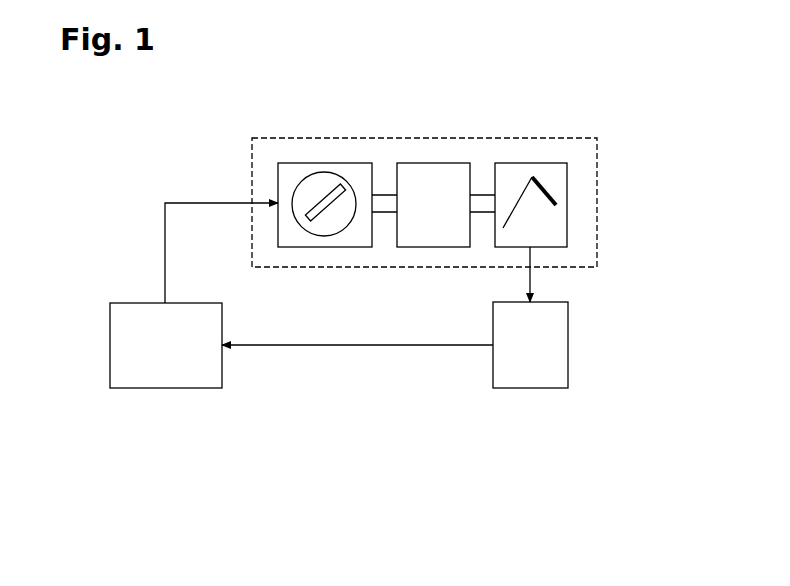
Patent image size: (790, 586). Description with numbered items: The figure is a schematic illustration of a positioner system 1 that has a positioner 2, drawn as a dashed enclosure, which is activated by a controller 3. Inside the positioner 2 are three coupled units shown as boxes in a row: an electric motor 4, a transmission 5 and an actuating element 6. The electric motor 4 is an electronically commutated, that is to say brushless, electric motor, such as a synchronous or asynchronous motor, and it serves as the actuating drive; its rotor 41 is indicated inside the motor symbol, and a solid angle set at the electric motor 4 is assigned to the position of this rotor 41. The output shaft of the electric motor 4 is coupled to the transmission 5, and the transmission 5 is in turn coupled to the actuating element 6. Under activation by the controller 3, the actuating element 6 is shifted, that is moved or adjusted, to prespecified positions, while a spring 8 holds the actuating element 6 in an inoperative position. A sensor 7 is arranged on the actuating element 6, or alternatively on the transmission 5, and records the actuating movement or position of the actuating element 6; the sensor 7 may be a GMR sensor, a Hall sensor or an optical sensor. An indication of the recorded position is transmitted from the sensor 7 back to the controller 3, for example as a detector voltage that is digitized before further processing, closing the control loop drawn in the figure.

The positioner system 1 is at (215, 133).
The positioner 2 is at (597, 138).
The controller 3 is at (165, 388).
The electric motor 4 is at (296, 163).
The rotor 41 is at (326, 178).
The transmission 5 is at (430, 163).
The actuating element 6 is at (528, 163).
The sensor 7 is at (530, 388).
The spring 8 is at (552, 193).